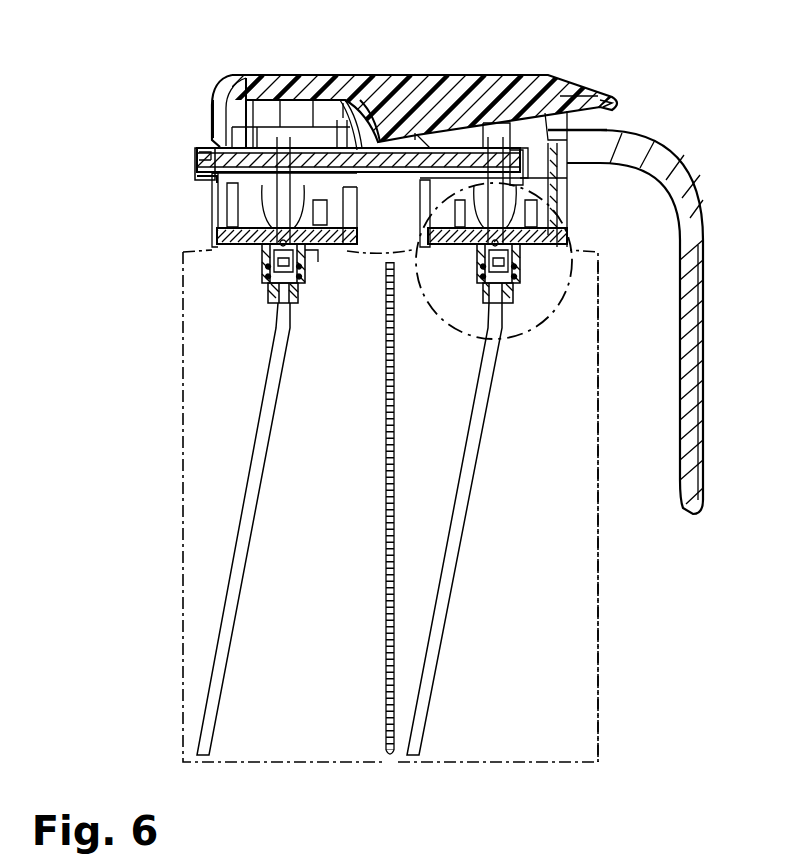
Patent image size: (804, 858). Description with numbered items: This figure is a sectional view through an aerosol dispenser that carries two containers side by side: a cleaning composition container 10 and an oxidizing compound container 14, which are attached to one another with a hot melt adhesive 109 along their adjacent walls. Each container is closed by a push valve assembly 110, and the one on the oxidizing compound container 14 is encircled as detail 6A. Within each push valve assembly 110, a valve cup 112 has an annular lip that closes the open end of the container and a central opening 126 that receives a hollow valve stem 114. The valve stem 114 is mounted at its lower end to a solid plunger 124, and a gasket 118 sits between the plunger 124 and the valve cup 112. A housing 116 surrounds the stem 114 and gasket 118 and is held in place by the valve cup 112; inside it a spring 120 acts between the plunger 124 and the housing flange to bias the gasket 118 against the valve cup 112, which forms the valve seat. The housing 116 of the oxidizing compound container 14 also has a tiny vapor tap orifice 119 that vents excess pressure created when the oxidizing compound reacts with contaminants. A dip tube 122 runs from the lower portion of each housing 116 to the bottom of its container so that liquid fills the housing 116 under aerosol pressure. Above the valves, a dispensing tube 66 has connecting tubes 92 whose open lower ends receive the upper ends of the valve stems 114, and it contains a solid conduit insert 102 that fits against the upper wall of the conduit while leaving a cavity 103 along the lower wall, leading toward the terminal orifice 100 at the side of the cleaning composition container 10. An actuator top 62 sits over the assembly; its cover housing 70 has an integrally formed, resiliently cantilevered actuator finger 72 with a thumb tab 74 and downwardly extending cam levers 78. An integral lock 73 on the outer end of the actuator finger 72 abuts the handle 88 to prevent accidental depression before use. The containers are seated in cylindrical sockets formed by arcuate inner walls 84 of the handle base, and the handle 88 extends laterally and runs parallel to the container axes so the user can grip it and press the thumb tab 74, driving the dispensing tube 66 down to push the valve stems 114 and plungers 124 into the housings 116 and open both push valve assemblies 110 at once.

The cleaning composition container 10 is at (190, 610).
The oxidizing compound container 14 is at (595, 641).
The detail view circle 6A is at (552, 323).
The actuator top 62 is at (213, 96).
The dispensing tube 66 is at (516, 142).
The cover housing 70 is at (212, 117).
The actuator finger 72 is at (587, 92).
The integral lock 73 is at (603, 131).
The thumb tab 74 is at (619, 105).
The cam lever 78 is at (360, 108).
The arcuate inner wall 84 is at (350, 103).
The handle 88 is at (705, 296).
The connecting tube 92 is at (505, 180).
The terminal orifice 100 is at (195, 150).
The solid conduit insert 102 is at (214, 147).
The cavity 103 is at (214, 180).
The hot melt adhesive 109 is at (385, 702).
The push valve assembly 110 is at (256, 273).
The valve cup 112 is at (262, 250).
The valve stem 114 is at (215, 230).
The housing 116 is at (277, 300).
The gasket 118 is at (262, 262).
The vapor tap orifice 119 is at (513, 262).
The spring 120 is at (270, 287).
The dip tube 122 is at (240, 540).
The plunger 124 is at (303, 260).
The opening 126 is at (210, 241).